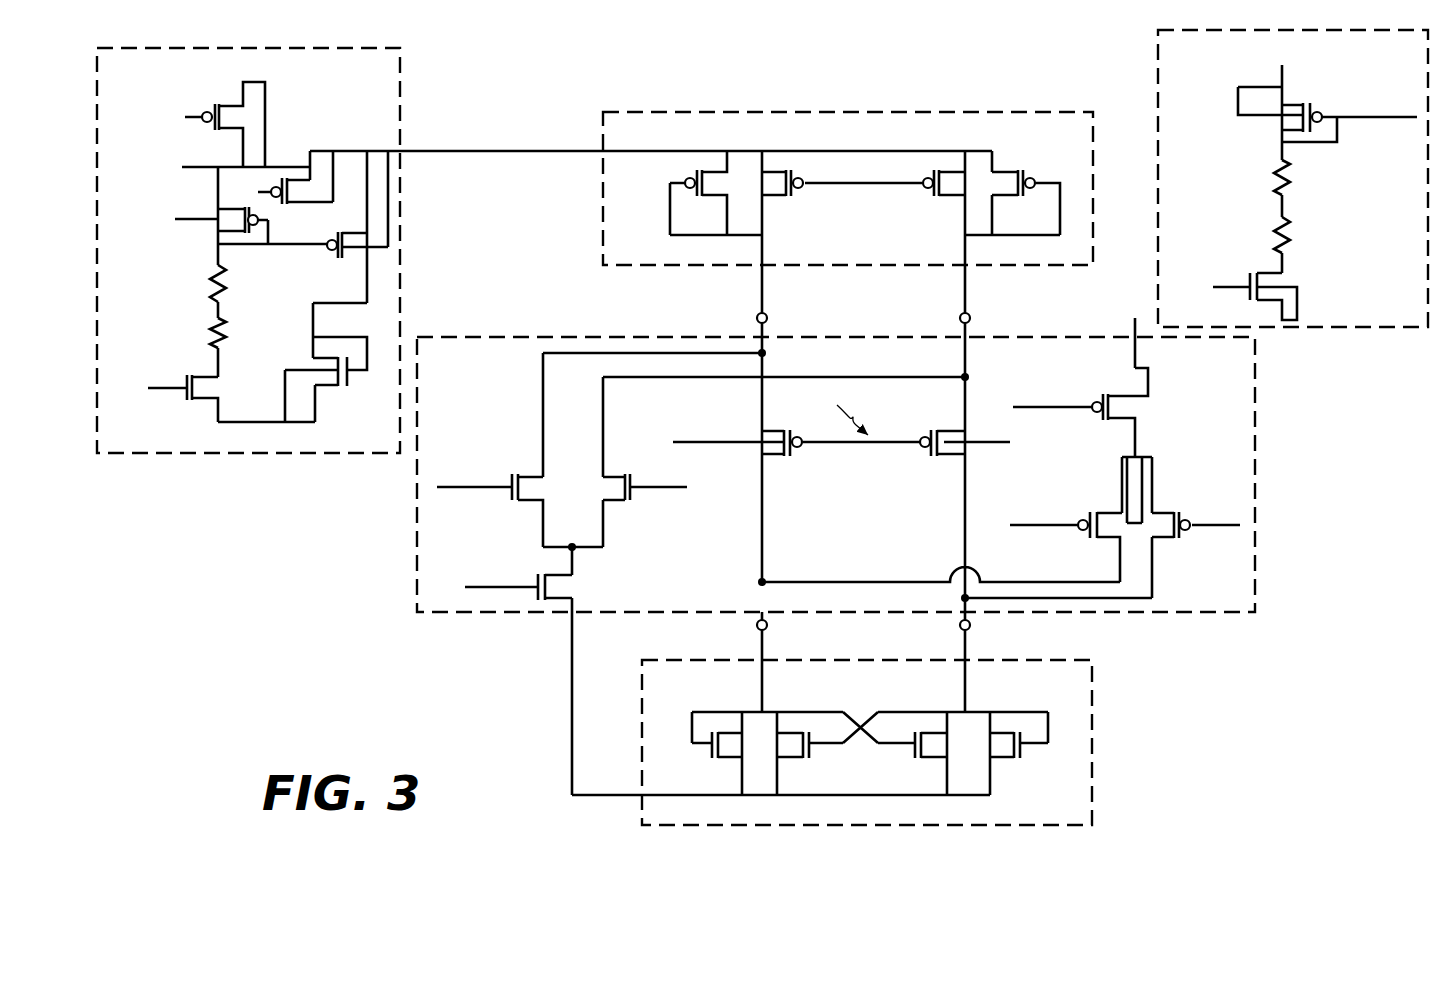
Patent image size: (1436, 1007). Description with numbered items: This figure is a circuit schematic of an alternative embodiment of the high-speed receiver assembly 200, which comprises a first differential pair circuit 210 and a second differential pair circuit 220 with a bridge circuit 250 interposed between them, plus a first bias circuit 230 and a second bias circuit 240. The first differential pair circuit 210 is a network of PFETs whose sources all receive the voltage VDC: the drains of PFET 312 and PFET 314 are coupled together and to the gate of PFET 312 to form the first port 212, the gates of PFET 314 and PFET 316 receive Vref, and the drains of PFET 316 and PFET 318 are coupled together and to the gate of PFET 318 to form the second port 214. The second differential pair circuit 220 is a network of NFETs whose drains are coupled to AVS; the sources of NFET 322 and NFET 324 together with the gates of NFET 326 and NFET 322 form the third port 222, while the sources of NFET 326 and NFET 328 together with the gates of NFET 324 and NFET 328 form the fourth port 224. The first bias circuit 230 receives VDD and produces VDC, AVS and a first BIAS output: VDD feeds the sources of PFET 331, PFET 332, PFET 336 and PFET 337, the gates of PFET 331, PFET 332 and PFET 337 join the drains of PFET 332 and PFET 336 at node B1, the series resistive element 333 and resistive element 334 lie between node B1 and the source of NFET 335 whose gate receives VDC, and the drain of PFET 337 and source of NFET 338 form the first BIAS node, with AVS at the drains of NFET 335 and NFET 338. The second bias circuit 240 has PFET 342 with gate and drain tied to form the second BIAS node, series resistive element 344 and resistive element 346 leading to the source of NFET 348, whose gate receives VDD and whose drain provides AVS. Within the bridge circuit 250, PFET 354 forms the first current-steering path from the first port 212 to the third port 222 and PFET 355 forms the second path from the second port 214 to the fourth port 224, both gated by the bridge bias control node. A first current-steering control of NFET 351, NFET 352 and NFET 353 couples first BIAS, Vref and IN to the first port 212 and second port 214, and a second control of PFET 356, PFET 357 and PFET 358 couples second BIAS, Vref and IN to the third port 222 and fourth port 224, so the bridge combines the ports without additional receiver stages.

The high-speed receiver assembly 200 is at (333, 617).
The first differential pair circuit 210 is at (655, 261).
The first port 212 is at (765, 310).
The second port 214 is at (968, 310).
The second differential pair circuit 220 is at (698, 819).
The third port 222 is at (765, 645).
The fourth port 224 is at (968, 645).
The first bias circuit 230 is at (138, 77).
The second bias circuit 240 is at (1210, 62).
The bridge circuit 250 is at (1232, 369).
The PFET 312 is at (705, 165).
The PFET 314 is at (782, 207).
The PFET 316 is at (945, 165).
The PFET 318 is at (1002, 158).
The NFET 322 is at (723, 763).
The NFET 324 is at (803, 763).
The NFET 326 is at (932, 725).
The NFET 328 is at (1002, 768).
The PFET 331 is at (232, 96).
The PFET 332 is at (208, 223).
The resistive element 333 is at (220, 292).
The resistive element 334 is at (215, 352).
The NFET 335 is at (198, 410).
The PFET 336 is at (320, 200).
The PFET 337 is at (375, 252).
The NFET 338 is at (325, 392).
The PFET 342 is at (1302, 88).
The resistive element 344 is at (1275, 183).
The resistive element 346 is at (1275, 248).
The NFET 348 is at (1292, 273).
The NFET 351 is at (575, 587).
The NFET 352 is at (528, 510).
The NFET 353 is at (613, 510).
The PFET 354 is at (773, 465).
The PFET 355 is at (943, 465).
The PFET 356 is at (1108, 542).
The PFET 357 is at (1168, 547).
The PFET 358 is at (1138, 413).